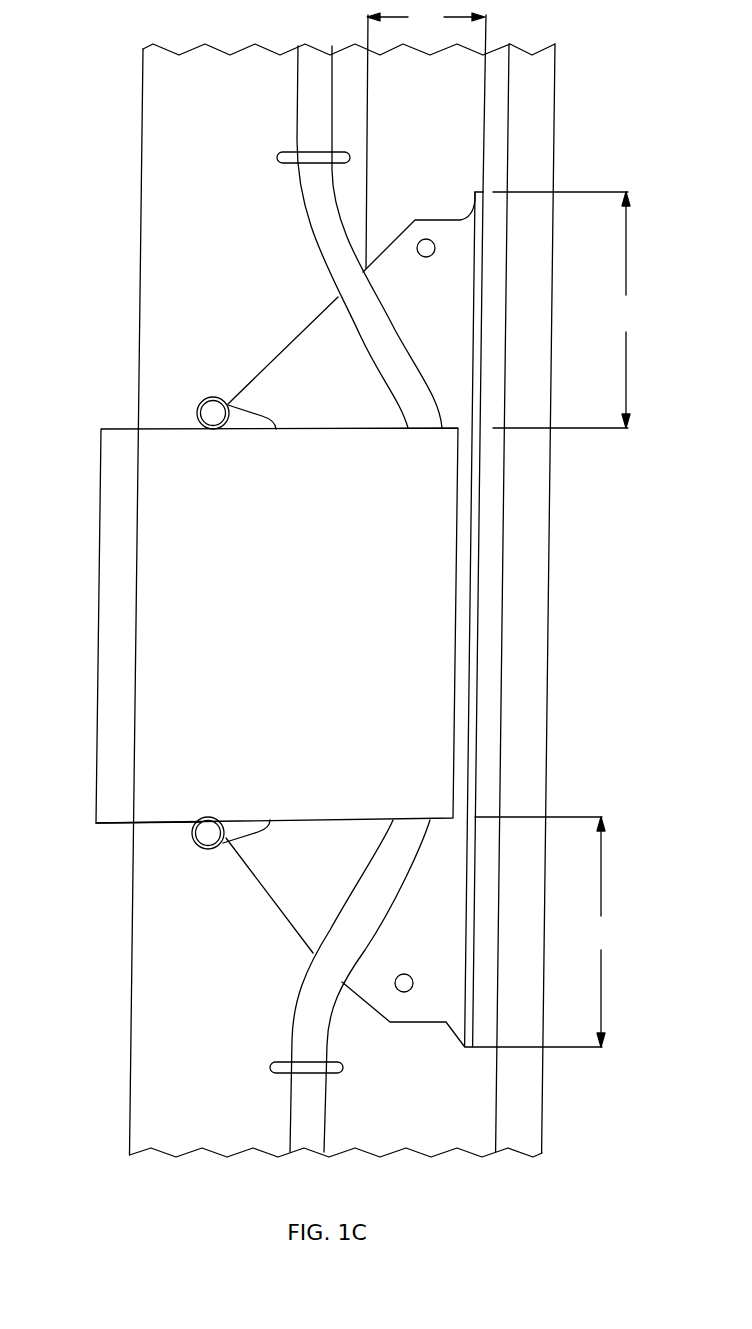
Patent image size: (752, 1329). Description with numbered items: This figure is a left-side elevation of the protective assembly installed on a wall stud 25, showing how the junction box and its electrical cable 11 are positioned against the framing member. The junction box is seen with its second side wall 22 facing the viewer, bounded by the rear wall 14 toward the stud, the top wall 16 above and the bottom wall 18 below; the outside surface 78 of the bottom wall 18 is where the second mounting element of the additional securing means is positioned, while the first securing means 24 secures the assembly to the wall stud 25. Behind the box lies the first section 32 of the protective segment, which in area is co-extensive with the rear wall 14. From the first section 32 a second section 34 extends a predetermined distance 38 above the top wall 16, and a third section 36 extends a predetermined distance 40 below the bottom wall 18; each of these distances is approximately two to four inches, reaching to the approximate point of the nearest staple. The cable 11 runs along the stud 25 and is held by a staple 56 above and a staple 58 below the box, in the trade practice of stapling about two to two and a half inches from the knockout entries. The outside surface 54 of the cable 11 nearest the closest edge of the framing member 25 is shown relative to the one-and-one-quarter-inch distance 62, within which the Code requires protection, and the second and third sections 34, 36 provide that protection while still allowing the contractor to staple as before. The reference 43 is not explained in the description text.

The electrical cable 11 is at (345, 599).
The rear wall 14 is at (384, 643).
The top wall 16 is at (253, 607).
The bottom wall 18 is at (133, 840).
The second side wall 22 is at (102, 620).
The first securing means 24 is at (209, 386).
The wall stud 25 is at (142, 130).
The first section 32 is at (479, 545).
The second section 34 is at (463, 314).
The third section 36 is at (452, 1030).
The predetermined distance above top wall 38 is at (566, 310).
The predetermined distance below bottom wall 40 is at (543, 932).
The right wall panel 43 is at (544, 583).
The outside surface of cable 54 is at (350, 210).
The staple 56 is at (284, 156).
The staple 58 is at (274, 1067).
The 1¼ inch distance 62 is at (426, 136).
The outside surface of bottom wall 78 is at (100, 824).